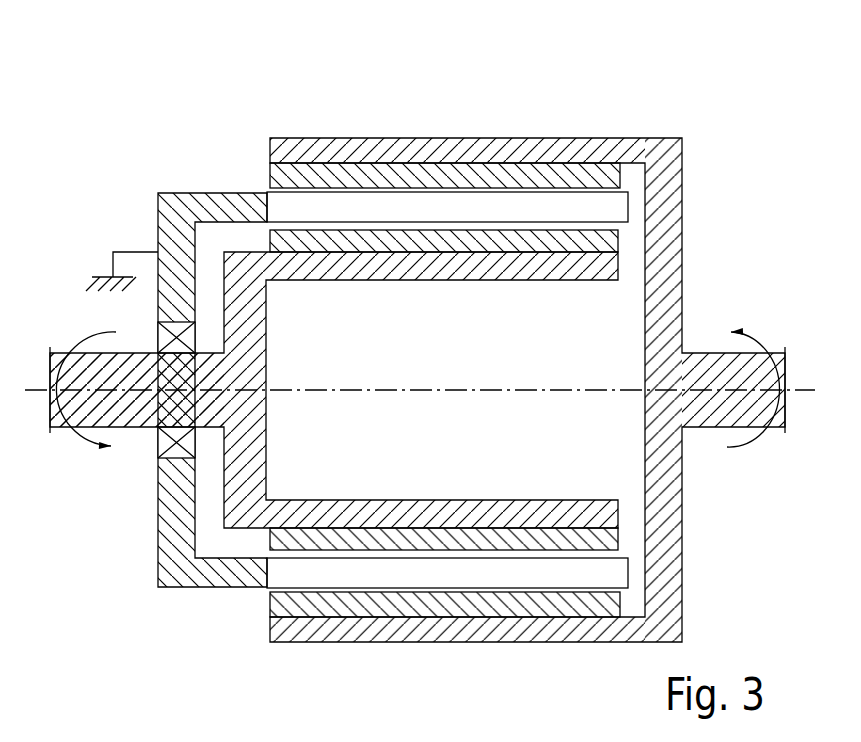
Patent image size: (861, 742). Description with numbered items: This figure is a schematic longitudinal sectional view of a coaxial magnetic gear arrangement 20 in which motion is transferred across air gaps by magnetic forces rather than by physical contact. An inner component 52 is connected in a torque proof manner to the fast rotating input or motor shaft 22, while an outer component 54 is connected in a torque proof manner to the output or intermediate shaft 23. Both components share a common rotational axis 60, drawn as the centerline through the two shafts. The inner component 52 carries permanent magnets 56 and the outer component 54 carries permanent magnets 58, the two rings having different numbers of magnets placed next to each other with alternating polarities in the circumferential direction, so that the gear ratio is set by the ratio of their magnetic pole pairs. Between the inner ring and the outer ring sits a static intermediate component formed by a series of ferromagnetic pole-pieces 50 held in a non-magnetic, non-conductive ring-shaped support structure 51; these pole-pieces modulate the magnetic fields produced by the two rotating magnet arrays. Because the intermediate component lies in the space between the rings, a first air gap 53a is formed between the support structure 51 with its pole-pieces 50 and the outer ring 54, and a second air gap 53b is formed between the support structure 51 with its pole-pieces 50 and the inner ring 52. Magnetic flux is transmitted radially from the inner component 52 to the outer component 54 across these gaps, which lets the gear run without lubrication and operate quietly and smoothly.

The electric motor 20 is at (706, 84).
The input or motor shaft 22 is at (705, 372).
The output or intermediate shaft 23 is at (127, 412).
The pole-pieces 50 is at (292, 206).
The support structure 51 is at (203, 205).
The inner component 52 is at (440, 272).
The first air gap 53a is at (380, 590).
The second air gap 53b is at (480, 555).
The outer component 54 is at (480, 152).
The permanent magnets 56 is at (509, 245).
The permanent magnets 58 is at (535, 170).
The rotational axis 60 is at (33, 388).